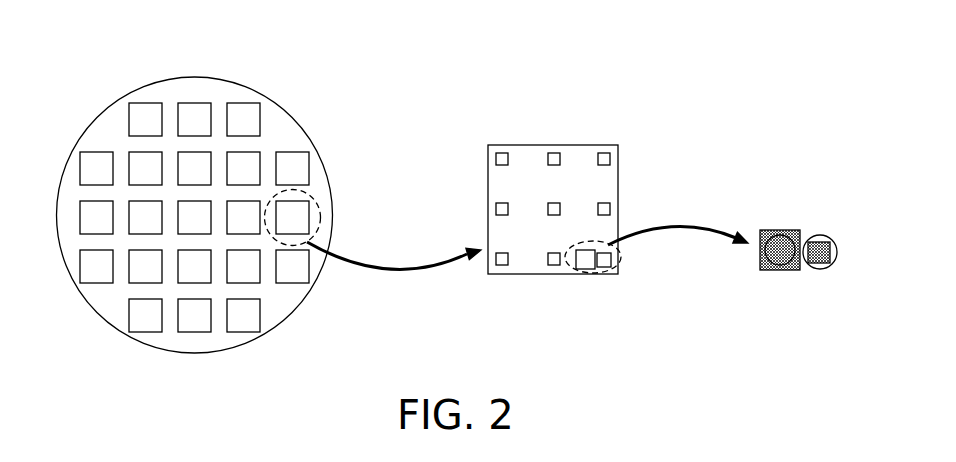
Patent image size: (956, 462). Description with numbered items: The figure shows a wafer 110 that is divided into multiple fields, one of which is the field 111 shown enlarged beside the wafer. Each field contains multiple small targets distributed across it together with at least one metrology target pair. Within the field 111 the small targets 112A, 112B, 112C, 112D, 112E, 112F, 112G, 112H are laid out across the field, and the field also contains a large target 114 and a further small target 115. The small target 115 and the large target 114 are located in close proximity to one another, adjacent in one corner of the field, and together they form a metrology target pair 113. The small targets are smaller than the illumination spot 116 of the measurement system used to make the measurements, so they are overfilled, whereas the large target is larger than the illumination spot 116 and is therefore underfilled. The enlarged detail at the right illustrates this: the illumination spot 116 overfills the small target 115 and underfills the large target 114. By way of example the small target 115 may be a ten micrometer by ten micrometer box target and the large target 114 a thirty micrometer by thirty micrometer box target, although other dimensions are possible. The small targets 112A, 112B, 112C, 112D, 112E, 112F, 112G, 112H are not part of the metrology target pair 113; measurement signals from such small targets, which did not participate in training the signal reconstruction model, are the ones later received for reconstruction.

The wafer 110 is at (287, 115).
The field 111 is at (523, 143).
The target 112A is at (500, 166).
The target 112B is at (553, 166).
The target 112C is at (608, 154).
The target 112D is at (500, 216).
The target 112E is at (553, 216).
The target 112F is at (608, 203).
The target 112G is at (500, 266).
The target 112H is at (553, 266).
The metrology target pair 113 is at (617, 274).
The large target 114 is at (587, 270).
The small target 115 is at (605, 268).
The illumination spot 116 is at (780, 232).